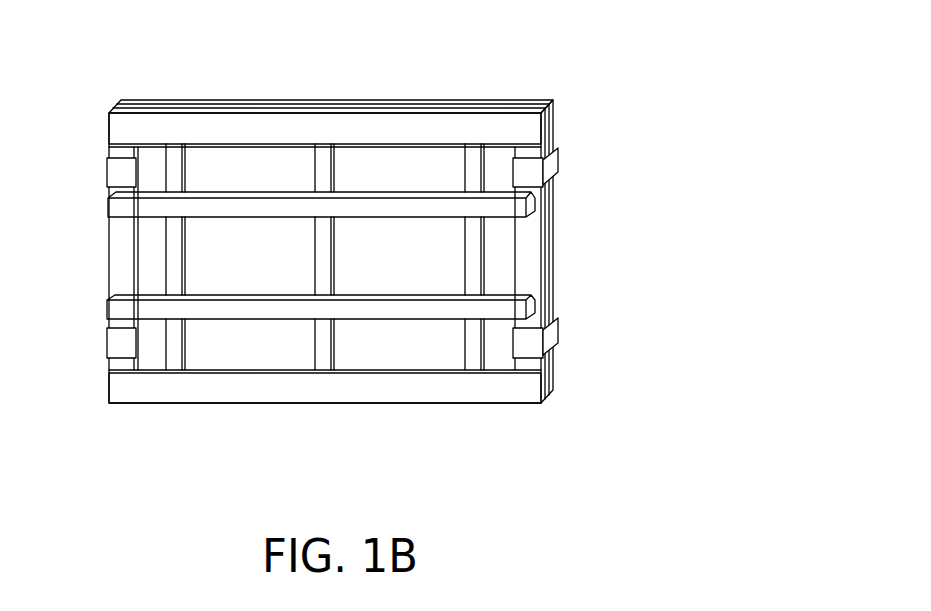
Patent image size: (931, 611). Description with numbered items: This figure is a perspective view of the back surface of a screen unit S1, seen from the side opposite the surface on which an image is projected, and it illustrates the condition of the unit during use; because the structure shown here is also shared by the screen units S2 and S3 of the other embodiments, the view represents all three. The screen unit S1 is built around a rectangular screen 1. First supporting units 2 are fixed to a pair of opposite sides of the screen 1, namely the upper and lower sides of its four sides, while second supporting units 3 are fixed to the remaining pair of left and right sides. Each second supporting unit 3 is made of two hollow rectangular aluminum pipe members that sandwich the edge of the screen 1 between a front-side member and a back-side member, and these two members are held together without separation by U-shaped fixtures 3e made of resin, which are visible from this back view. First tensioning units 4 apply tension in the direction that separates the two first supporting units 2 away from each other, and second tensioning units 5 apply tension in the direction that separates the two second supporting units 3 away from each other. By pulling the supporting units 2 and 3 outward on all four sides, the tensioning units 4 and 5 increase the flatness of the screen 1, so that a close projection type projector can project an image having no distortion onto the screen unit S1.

The screen 1 is at (240, 170).
The first supporting unit 2 is at (397, 133).
The second supporting unit 3 is at (118, 258).
The U-shaped fixture 3e is at (122, 172).
The first tensioning unit 4 is at (323, 360).
The second tensioning unit 5 is at (120, 212).
The screen unit S1 is at (471, 70).
The screen unit S2 is at (329, 253).
The screen unit S3 is at (331, 247).